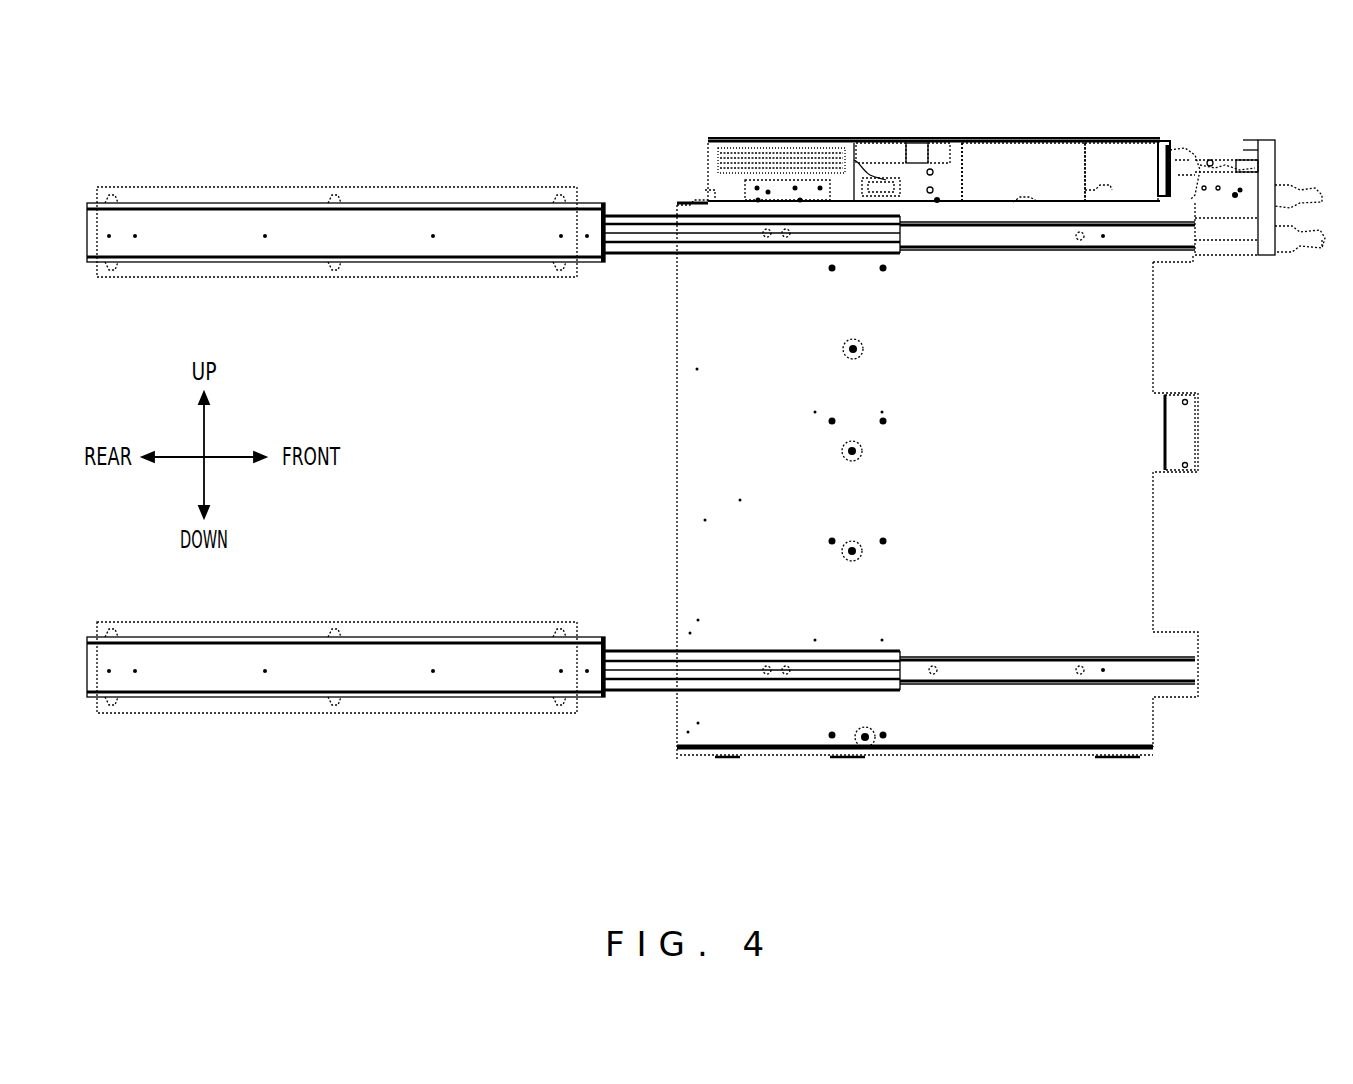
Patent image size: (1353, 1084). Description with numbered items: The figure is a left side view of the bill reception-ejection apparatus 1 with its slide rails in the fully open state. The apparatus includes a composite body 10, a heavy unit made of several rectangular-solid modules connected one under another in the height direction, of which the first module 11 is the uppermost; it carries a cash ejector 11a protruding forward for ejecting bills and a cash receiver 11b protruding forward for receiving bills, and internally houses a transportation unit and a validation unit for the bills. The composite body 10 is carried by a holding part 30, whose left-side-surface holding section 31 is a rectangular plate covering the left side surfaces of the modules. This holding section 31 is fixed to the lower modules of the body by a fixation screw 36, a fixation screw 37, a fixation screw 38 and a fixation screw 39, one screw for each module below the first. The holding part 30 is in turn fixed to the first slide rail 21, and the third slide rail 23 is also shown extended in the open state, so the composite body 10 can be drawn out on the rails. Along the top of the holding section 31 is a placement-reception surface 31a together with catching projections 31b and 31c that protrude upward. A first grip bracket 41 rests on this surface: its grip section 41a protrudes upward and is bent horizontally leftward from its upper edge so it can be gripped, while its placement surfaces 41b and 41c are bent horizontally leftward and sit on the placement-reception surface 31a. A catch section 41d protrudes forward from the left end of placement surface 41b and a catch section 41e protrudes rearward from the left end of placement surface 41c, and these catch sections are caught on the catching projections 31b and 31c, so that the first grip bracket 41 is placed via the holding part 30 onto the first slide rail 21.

The bill reception-ejection apparatus 1 is at (202, 140).
The composite body 10 is at (759, 125).
The first module 11 is at (785, 140).
The cash ejector 11a is at (1300, 250).
The cash receiver 11b is at (1298, 148).
The first slide rail 21 is at (517, 186).
The third slide rail 23 is at (518, 707).
The holding part 30 is at (1160, 511).
The left-side-surface holding section 31 is at (1140, 553).
The placement-reception surface 31a is at (1057, 202).
The catching projection 31b is at (705, 200).
The catching projection 31c is at (1208, 152).
The fixation screw 36 is at (845, 349).
The fixation screw 37 is at (845, 451).
The fixation screw 38 is at (845, 553).
The fixation screw 39 is at (865, 742).
The first grip bracket 41 is at (957, 140).
The grip section 41a is at (1000, 138).
The placement surface 41b is at (1105, 202).
The placement surface 41c is at (873, 140).
The catch section 41d is at (1182, 150).
The catch section 41e is at (712, 140).